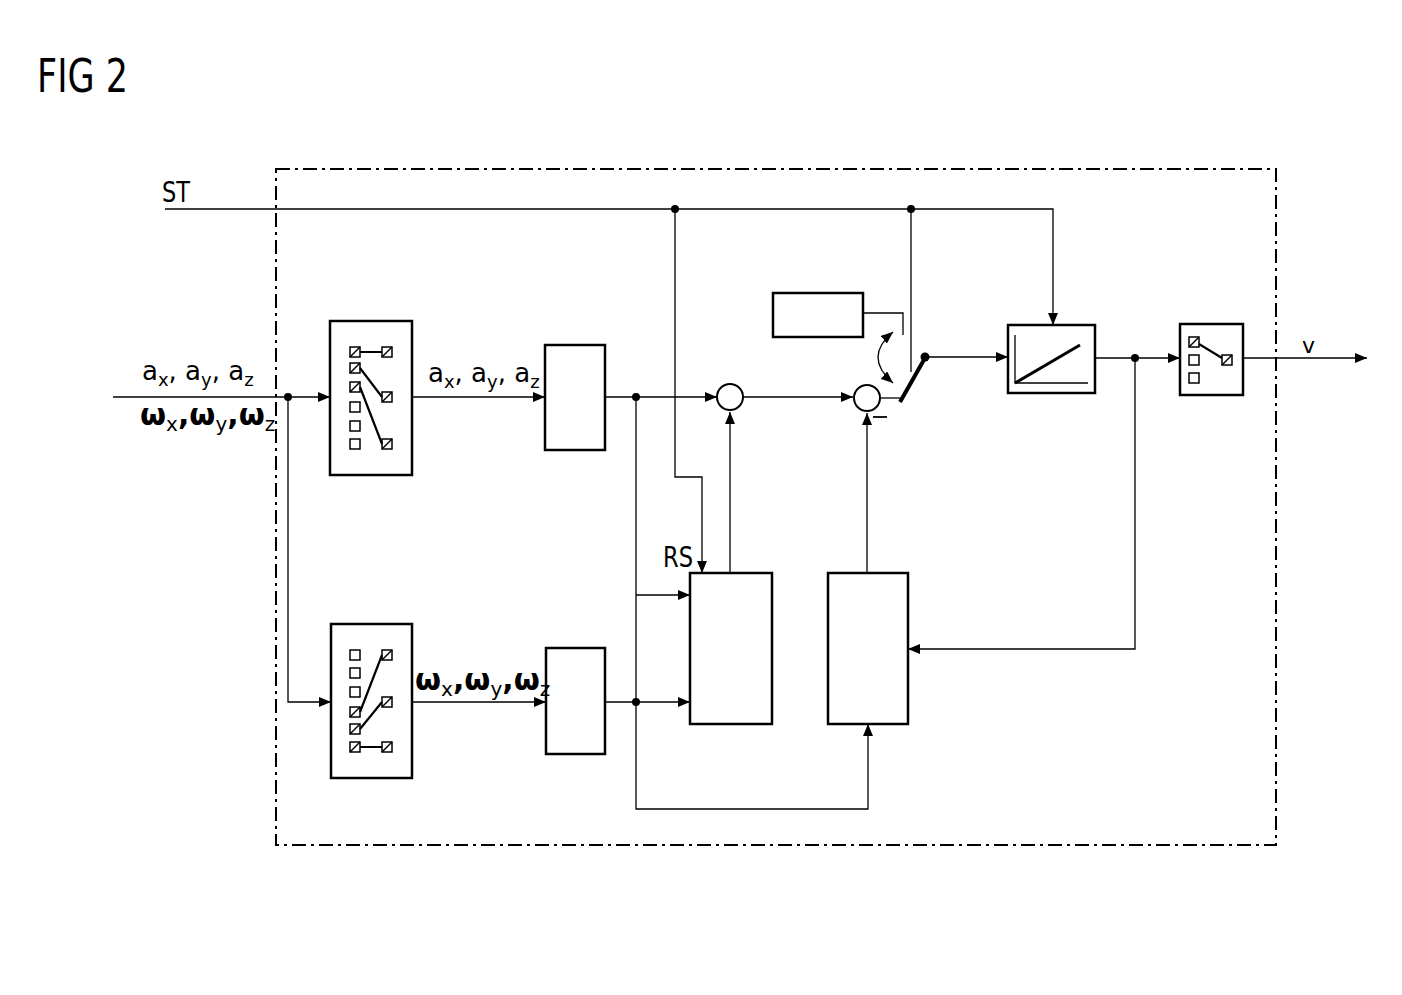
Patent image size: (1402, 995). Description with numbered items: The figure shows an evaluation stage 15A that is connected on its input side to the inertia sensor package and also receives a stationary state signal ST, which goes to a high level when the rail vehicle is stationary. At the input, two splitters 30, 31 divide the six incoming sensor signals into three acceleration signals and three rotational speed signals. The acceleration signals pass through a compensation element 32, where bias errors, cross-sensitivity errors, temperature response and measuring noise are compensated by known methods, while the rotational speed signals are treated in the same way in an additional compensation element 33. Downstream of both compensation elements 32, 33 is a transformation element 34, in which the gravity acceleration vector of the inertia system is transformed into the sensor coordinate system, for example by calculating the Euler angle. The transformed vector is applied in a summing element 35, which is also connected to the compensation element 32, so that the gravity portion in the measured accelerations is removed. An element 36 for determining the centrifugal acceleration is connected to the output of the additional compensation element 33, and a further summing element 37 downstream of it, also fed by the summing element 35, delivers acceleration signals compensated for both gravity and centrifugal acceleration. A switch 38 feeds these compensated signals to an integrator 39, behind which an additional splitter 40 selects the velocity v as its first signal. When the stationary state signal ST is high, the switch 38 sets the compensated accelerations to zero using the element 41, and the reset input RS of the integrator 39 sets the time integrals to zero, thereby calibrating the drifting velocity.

The evaluation stage 15A is at (759, 169).
The splitter 30 is at (376, 320).
The splitter 31 is at (376, 623).
The compensation element 32 is at (572, 345).
The additional compensation element 33 is at (576, 648).
The transformation element 34 is at (728, 727).
The summing element 35 is at (730, 383).
The element for determining the centrifugal acceleration 36 is at (908, 703).
The further summing element 37 is at (857, 410).
The switch 38 is at (935, 362).
The integrator 39 is at (1052, 395).
The additional splitter 40 is at (1208, 323).
The element 41 is at (815, 293).